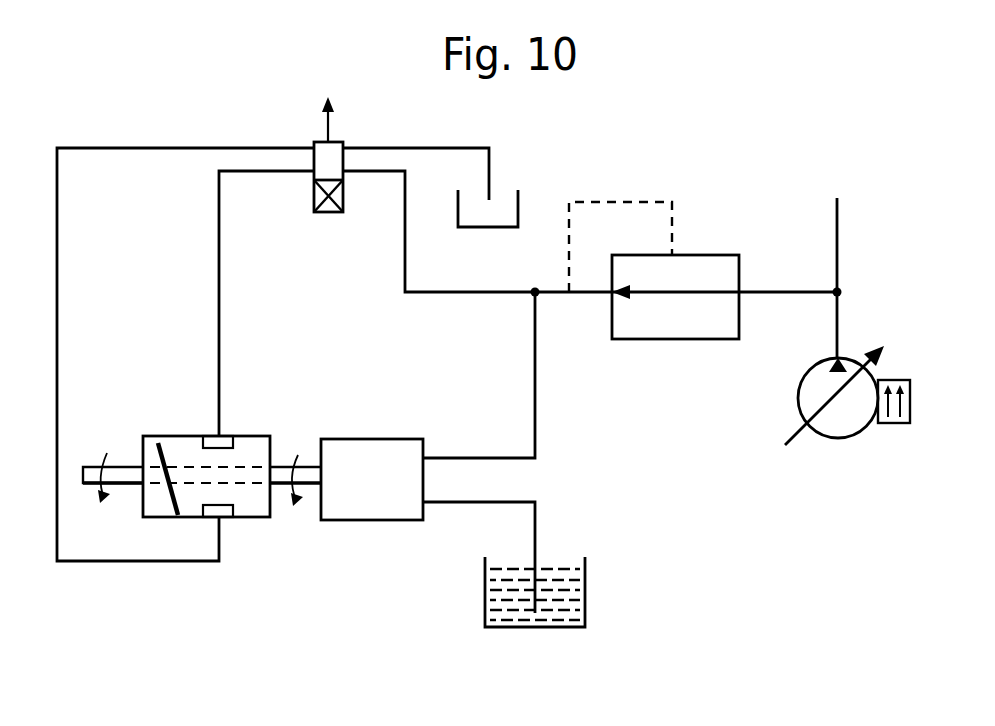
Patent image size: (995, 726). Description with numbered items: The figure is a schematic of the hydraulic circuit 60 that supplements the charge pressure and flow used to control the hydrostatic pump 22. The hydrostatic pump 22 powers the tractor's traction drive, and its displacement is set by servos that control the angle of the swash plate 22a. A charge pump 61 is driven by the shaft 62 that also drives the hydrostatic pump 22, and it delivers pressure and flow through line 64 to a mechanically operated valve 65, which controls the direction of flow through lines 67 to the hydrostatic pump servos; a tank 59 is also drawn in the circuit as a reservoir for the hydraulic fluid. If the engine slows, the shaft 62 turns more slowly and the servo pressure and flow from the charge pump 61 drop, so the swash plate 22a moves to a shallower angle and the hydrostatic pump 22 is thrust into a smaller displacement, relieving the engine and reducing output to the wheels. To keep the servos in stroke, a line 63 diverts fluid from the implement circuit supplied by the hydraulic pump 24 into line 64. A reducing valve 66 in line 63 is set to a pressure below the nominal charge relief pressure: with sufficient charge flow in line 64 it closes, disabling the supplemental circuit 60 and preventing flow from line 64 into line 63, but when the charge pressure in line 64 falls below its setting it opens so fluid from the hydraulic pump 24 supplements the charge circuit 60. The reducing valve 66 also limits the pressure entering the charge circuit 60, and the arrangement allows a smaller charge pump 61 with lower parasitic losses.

The hydrostatic pump 22 is at (245, 520).
The swash plate 22a is at (174, 444).
The hydraulic pump 24 is at (838, 440).
The tank 59 is at (518, 198).
The hydraulic circuit 60 is at (638, 128).
The charge pump 61 is at (375, 439).
The shaft 62 is at (312, 490).
The line 63 is at (765, 292).
The line 64 is at (465, 291).
The mechanically operated valve 65 is at (338, 142).
The reducing valve 66 is at (667, 340).
The lines 67 is at (118, 148).